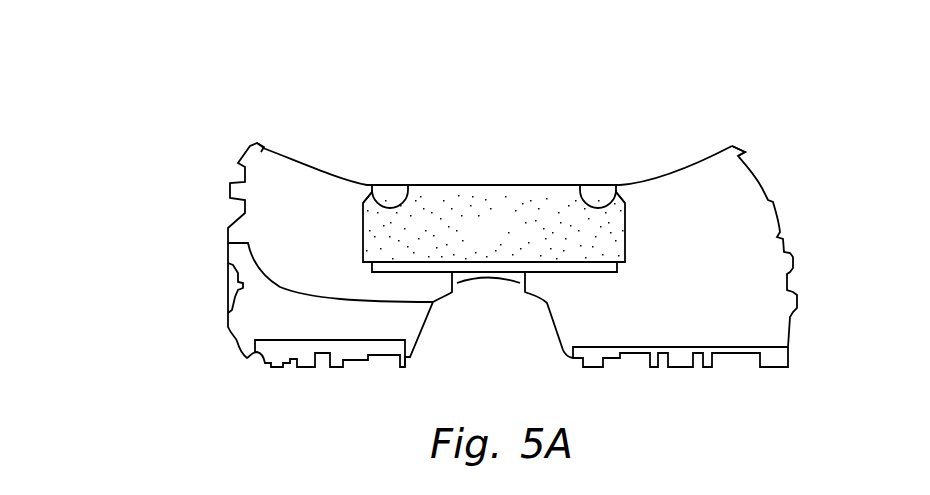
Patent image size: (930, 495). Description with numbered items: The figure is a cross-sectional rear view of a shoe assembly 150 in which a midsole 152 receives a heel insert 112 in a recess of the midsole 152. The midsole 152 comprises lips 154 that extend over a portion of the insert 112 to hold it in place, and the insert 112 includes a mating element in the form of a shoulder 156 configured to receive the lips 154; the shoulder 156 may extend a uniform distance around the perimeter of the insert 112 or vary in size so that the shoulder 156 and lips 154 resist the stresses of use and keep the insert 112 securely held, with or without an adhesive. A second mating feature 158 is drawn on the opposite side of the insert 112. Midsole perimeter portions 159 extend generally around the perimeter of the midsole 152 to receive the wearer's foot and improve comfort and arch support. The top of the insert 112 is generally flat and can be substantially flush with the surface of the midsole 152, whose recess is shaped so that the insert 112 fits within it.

The shoe assembly 150 is at (190, 121).
The midsole 152 is at (668, 192).
The lips 154 is at (367, 184).
The shoulder 156 is at (408, 186).
The second notch channel 158 is at (582, 186).
The midsole perimeter portions 159 is at (263, 149).
The heel insert 112 is at (483, 184).